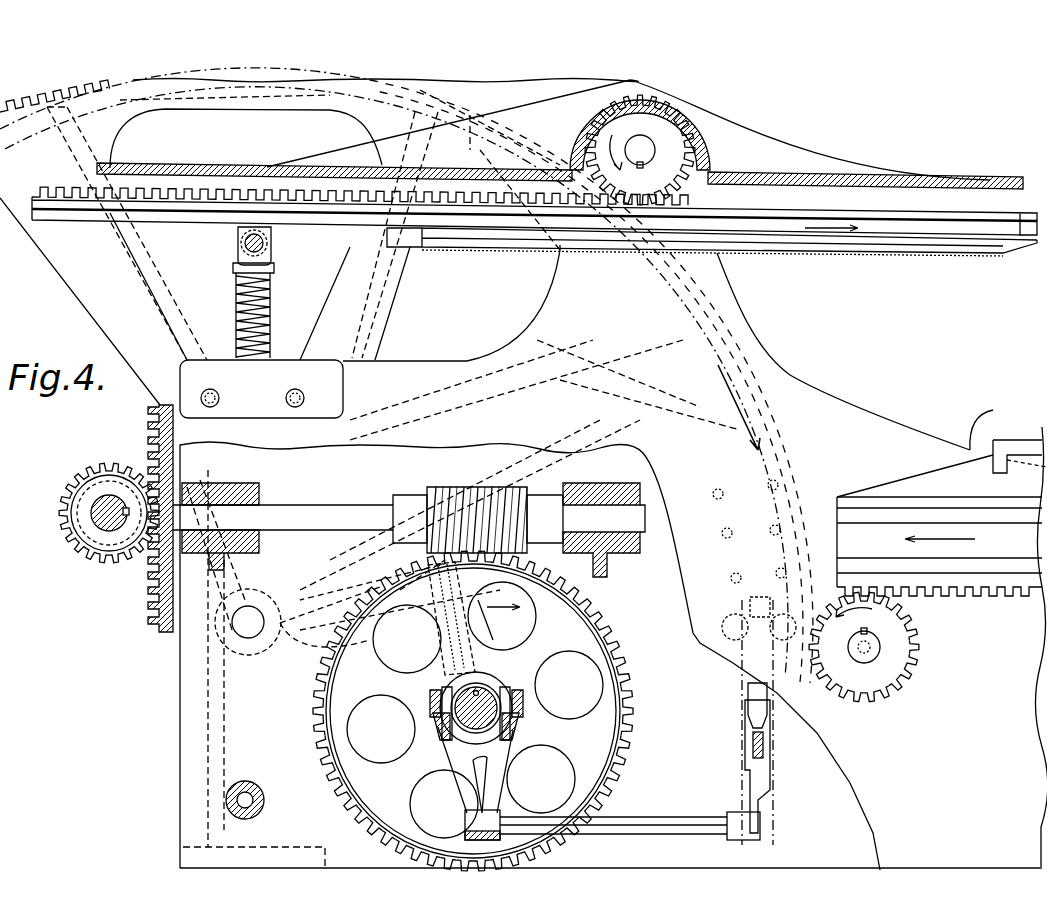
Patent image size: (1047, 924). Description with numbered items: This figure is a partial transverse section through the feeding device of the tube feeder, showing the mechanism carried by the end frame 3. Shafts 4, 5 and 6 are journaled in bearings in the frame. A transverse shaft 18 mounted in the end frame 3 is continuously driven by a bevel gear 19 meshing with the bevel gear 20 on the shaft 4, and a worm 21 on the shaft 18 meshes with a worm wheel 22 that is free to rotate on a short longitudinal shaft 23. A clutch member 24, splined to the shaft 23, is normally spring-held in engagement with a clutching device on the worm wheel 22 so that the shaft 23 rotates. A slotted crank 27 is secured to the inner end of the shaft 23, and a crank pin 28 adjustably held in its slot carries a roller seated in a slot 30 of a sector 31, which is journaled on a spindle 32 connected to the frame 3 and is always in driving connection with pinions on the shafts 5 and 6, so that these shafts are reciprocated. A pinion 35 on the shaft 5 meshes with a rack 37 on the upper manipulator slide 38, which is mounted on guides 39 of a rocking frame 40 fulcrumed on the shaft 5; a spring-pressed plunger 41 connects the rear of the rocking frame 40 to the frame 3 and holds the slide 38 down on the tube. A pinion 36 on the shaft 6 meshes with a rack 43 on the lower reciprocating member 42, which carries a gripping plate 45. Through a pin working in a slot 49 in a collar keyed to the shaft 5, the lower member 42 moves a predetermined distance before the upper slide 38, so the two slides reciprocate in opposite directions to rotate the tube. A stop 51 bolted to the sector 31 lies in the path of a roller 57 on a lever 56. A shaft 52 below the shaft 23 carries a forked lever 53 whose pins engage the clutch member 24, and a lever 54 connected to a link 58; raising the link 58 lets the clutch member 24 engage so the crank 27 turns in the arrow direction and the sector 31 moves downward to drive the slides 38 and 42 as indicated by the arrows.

The end frame 3 is at (523, 475).
The shaft 4 is at (100, 520).
The shaft 5 is at (640, 146).
The shaft 6 is at (864, 648).
The transverse shaft 18 is at (283, 526).
The bevel gear 19 is at (147, 582).
The bevel gear 20 is at (62, 508).
The worm 21 is at (520, 492).
The worm wheel 22 is at (622, 740).
The short longitudinal shaft 23 is at (516, 727).
The clutch member 24 is at (490, 690).
The slotted crank 27 is at (490, 614).
The crank pin 28 is at (470, 578).
The slot 30 is at (423, 603).
The sector 31 is at (806, 460).
The spindle 32 is at (248, 640).
The pinion 35 is at (534, 213).
The pinion 36 is at (920, 646).
The rack 37 is at (178, 193).
The upper manipulator slide 38 is at (833, 243).
The guides 39 is at (805, 193).
The rocking frame 40 is at (436, 190).
The spring-pressed plunger 41 is at (236, 272).
The reciprocating member 42 is at (939, 542).
The rack 43 is at (1004, 592).
The gripping plate 45 is at (1031, 435).
The slot 49 is at (935, 476).
The stop 51 is at (750, 604).
The shaft 52 is at (668, 830).
The forked lever 53 is at (465, 752).
The lever 54 is at (765, 768).
The lever 56 is at (747, 698).
The roller 57 is at (748, 620).
The link 58 is at (765, 742).